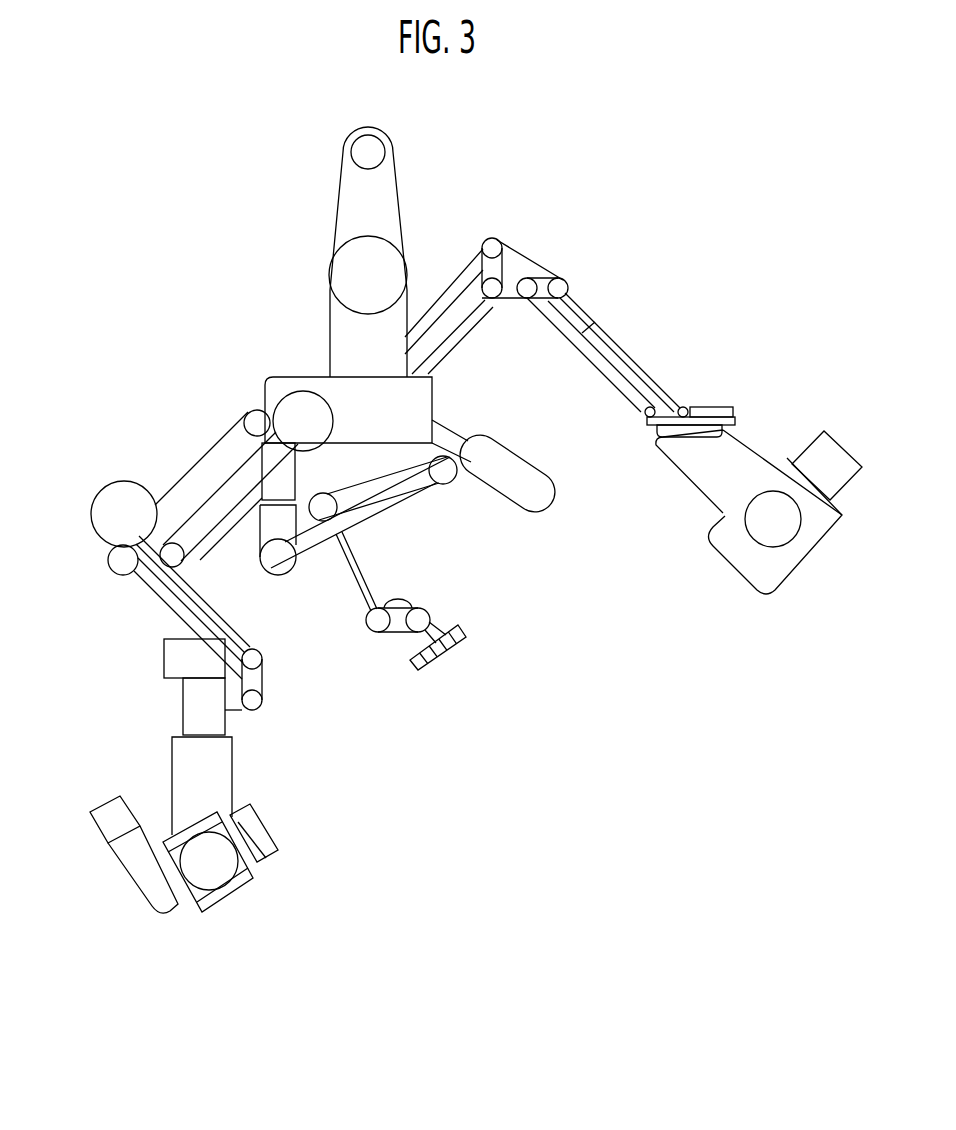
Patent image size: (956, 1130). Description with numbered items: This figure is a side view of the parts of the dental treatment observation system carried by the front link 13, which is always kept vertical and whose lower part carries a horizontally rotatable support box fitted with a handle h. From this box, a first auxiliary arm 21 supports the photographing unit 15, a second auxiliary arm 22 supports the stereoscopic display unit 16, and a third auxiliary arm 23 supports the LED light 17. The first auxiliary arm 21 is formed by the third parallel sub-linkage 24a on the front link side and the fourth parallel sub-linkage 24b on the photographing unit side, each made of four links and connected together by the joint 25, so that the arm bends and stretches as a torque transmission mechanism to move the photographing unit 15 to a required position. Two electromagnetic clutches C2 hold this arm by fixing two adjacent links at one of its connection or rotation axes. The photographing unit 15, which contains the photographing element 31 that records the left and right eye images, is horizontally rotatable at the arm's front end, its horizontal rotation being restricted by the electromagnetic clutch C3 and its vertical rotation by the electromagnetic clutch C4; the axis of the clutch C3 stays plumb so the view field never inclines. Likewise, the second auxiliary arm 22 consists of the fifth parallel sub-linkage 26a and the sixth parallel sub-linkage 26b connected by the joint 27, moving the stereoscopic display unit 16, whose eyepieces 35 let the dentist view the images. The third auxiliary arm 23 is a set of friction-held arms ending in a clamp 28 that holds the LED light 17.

The front link 13 is at (341, 188).
The electromagnetic clutch C2 is at (303, 391).
The first auxiliary arm 21 is at (213, 423).
The third parallel sub-linkage 24a is at (212, 497).
The joint 25 is at (123, 576).
The fourth parallel sub-linkage 24b is at (160, 600).
The electromagnetic clutch C3 is at (164, 662).
The electromagnetic clutch C4 is at (218, 873).
The photographing unit 15 is at (268, 826).
The photographing element 31 is at (118, 796).
The third auxiliary arm 23 is at (390, 512).
The handle h is at (547, 497).
The clamp 28 is at (393, 633).
The LED light 17 is at (440, 663).
The fifth parallel sub-linkage 26a is at (458, 304).
The joint 27 is at (528, 252).
The sixth parallel sub-linkage 26b is at (597, 320).
The second auxiliary arm 22 is at (668, 359).
The stereoscopic display unit 16 is at (800, 563).
The eyepiece 35 is at (848, 447).